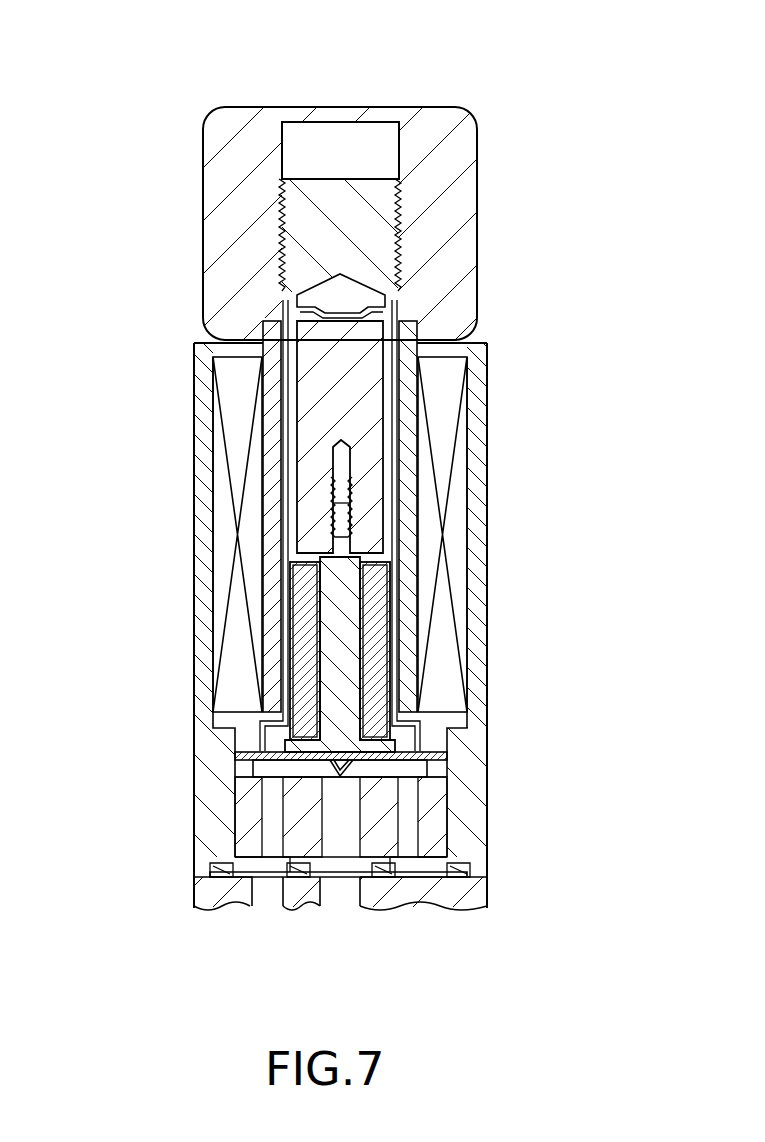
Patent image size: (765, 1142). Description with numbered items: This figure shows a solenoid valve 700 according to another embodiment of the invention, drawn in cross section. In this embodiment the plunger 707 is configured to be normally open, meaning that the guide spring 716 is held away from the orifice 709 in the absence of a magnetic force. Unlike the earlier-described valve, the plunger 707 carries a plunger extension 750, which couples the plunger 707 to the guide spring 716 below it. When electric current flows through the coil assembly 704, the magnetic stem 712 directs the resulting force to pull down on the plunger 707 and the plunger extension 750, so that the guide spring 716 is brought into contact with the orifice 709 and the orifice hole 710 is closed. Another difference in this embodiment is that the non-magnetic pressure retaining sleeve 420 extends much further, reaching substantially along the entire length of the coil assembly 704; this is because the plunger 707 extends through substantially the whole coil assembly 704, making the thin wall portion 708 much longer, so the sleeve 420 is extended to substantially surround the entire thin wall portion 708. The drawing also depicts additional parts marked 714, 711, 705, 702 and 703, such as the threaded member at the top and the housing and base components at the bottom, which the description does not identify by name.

The solenoid valve 700 is at (163, 97).
The screw 714 is at (402, 207).
The cap 711 is at (298, 310).
The plunger 707 is at (322, 402).
The thin wall portion 708 is at (283, 477).
The plunger extension 750 is at (342, 617).
The magnetic stem 712 is at (300, 647).
The non-magnetic pressure retaining sleeve 420 is at (407, 633).
The housing 705 is at (487, 452).
The coil assembly 704 is at (460, 515).
The orifice 709 is at (343, 761).
The guide spring 716 is at (273, 764).
The orifice hole 710 is at (337, 776).
The base plate 702 is at (267, 878).
The seal ring 703 is at (467, 877).